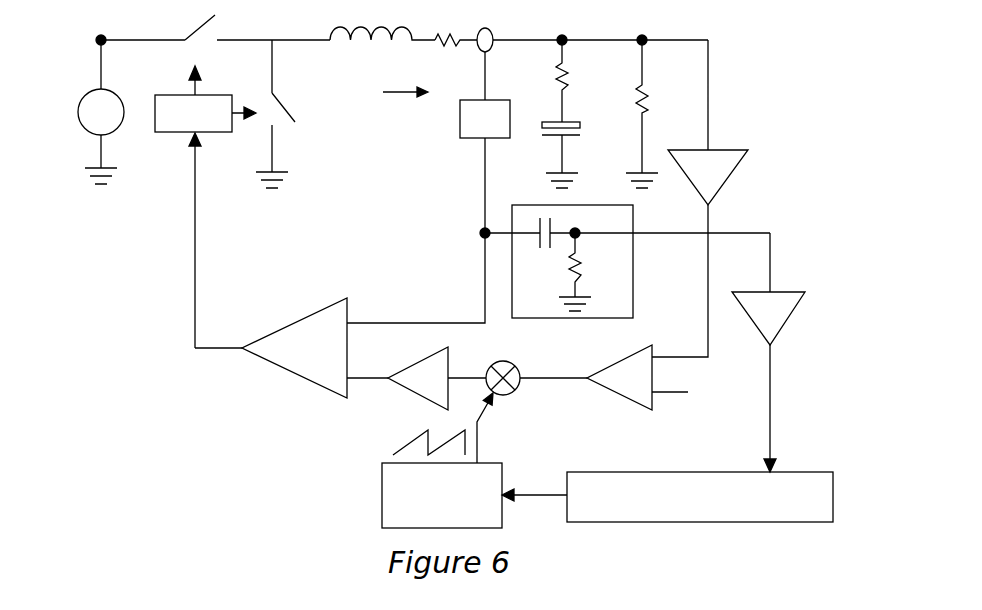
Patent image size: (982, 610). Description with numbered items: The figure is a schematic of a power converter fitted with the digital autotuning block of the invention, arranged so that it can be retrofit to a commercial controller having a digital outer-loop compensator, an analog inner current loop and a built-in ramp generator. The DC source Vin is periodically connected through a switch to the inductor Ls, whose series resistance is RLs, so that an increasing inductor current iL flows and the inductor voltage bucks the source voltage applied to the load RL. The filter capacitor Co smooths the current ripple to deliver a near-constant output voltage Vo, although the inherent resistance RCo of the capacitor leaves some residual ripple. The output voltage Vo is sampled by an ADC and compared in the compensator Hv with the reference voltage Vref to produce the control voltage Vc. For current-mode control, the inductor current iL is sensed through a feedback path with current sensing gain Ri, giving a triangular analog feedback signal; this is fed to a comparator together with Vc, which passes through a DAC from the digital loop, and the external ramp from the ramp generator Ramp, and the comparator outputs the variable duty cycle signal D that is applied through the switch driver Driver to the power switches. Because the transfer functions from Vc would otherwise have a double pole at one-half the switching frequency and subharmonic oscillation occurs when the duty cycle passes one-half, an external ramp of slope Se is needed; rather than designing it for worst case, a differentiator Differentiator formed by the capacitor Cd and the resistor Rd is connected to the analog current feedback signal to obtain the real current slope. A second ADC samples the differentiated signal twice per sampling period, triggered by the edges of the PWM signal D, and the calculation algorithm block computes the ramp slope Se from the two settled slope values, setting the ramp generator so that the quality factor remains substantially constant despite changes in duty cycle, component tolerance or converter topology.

The input voltage Vin is at (91, 108).
The switch driver Driver is at (205, 207).
The inductor Ls is at (382, 50).
The inductor series resistance RLs is at (456, 55).
The inductor current iL is at (405, 107).
The current sensing gain Ri is at (454, 175).
The output capacitor ESR RCo is at (599, 78).
The capacitor Co is at (579, 146).
The load resistor RL is at (667, 111).
The output voltage Vo is at (732, 53).
The analog-to-digital converter ADC is at (728, 311).
The differentiator capacitor Cd is at (625, 261).
The differentiator resistor Rd is at (588, 269).
The differentiator circuit Differentiator is at (498, 261).
The duty cycle signal D is at (252, 348).
The digital to analog converter DAC is at (416, 378).
The control voltage Vc is at (536, 389).
The compensator Hv is at (637, 377).
The reference voltage Vref is at (710, 398).
The external ramp generator Ramp is at (442, 460).
The external ramp slope Se is at (667, 497).